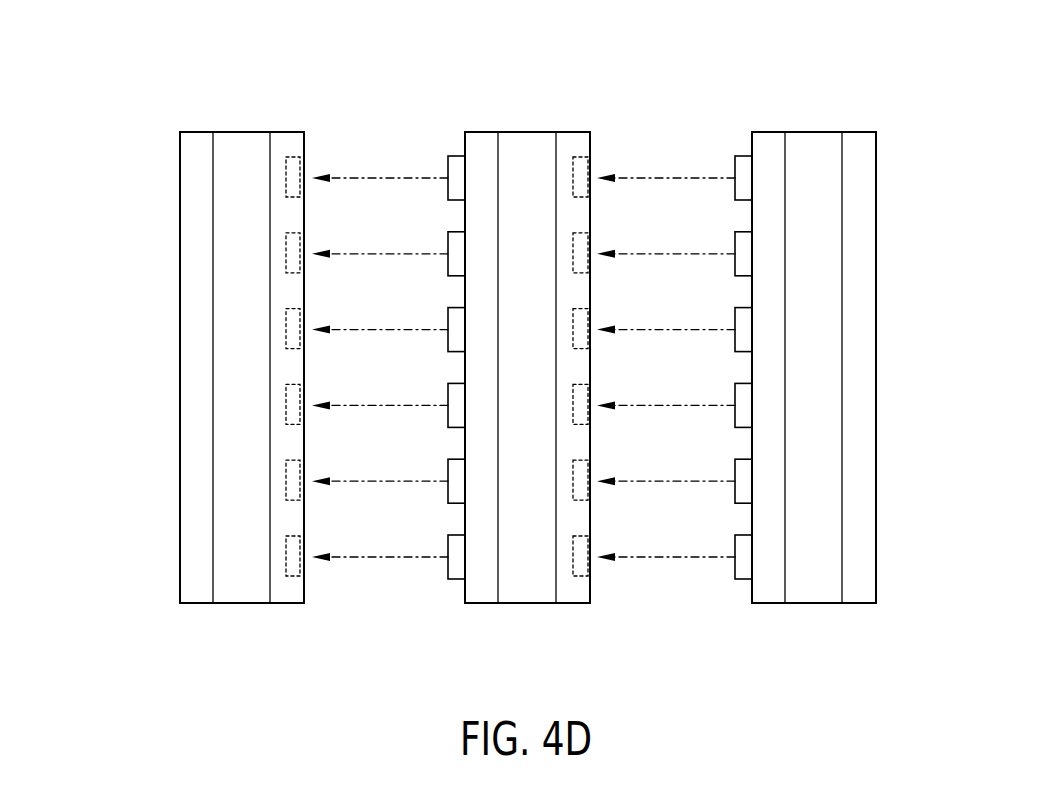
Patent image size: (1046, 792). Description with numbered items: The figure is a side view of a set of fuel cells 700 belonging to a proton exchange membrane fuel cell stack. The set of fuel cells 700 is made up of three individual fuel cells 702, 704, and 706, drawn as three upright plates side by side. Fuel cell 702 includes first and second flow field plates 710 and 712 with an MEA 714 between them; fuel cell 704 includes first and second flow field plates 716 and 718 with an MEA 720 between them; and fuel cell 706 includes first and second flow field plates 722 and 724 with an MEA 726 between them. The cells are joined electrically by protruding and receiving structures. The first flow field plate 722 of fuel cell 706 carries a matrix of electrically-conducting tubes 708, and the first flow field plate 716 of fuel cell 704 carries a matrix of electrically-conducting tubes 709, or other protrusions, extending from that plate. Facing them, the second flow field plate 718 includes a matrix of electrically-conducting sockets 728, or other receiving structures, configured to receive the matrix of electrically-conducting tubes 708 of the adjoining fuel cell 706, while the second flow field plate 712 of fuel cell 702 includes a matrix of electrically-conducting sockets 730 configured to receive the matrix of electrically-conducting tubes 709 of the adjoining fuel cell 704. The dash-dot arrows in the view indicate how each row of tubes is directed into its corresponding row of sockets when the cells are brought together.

The set of fuel cells 700 is at (499, 354).
The fuel cell 702 is at (261, 358).
The fuel cell 704 is at (545, 358).
The fuel cell 706 is at (822, 358).
The matrix of electrically-conducting tubes 708 is at (745, 132).
The matrix of electrically-conducting tubes 709 is at (458, 134).
The first flow field plate 710 is at (198, 603).
The second flow field plate 712 is at (287, 603).
The MEA 714 is at (227, 603).
The first flow field plate 716 is at (482, 603).
The second flow field plate 718 is at (572, 603).
The MEA 720 is at (513, 603).
The first flow field plate 722 is at (768, 603).
The second flow field plate 724 is at (856, 603).
The MEA 726 is at (800, 603).
The matrix of electrically-conducting sockets 728 is at (600, 568).
The matrix of electrically-conducting sockets 730 is at (313, 566).